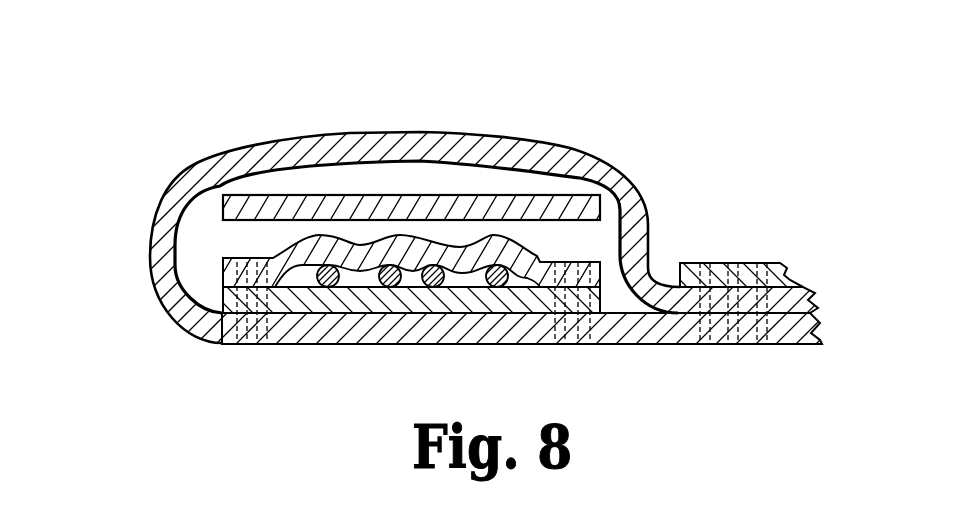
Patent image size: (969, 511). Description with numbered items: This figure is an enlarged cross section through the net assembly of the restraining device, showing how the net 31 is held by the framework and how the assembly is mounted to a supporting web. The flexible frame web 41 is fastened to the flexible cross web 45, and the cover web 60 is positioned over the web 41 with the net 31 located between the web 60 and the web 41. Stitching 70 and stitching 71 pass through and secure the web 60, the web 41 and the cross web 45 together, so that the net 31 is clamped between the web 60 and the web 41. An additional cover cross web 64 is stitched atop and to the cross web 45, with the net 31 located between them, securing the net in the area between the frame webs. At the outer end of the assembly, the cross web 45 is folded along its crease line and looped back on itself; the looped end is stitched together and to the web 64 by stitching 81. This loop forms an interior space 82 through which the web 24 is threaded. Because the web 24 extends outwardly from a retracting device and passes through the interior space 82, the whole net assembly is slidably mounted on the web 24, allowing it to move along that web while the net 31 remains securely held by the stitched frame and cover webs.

The cross web 45 is at (632, 192).
The interior space 82 is at (368, 178).
The web 24 is at (457, 200).
The net 31 is at (313, 273).
The web 60 is at (223, 269).
The web 41 is at (223, 292).
The stitching 70 is at (267, 297).
The stitching 71 is at (553, 305).
The stitching 81 is at (725, 302).
The cross web 64 is at (774, 263).